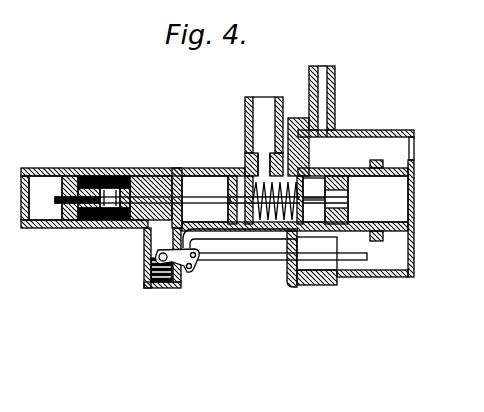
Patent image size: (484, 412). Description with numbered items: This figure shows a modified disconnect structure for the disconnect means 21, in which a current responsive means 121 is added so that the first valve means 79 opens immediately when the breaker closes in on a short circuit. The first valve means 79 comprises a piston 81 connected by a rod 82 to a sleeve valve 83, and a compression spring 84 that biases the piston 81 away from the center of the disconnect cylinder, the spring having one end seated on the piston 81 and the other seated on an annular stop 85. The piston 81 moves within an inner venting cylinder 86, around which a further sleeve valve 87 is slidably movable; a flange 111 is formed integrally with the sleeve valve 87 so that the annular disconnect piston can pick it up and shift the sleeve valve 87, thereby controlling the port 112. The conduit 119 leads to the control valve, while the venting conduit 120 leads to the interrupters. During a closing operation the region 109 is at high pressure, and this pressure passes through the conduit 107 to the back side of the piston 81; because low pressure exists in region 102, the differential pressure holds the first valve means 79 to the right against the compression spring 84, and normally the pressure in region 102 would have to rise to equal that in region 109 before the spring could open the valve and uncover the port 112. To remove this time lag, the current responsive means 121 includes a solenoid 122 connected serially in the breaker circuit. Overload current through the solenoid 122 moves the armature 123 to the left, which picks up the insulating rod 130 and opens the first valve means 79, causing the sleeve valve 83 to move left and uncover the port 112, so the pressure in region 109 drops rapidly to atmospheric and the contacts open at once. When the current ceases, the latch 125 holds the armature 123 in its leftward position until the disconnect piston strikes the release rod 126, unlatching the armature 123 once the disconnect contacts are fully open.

The venting conduit 120 is at (336, 82).
The conduit 119 is at (244, 116).
The current responsive means 121 is at (114, 164).
The armature 123 is at (158, 175).
The first valve means 79 is at (210, 175).
The piston 81 is at (234, 176).
The inner venting cylinder 86 is at (337, 175).
The flange 111 is at (379, 157).
The insulating rod 130 is at (231, 203).
The rod 82 is at (311, 200).
The annular stop 85 is at (314, 211).
The region 102 is at (400, 208).
The sleeve valve 83 is at (349, 216).
The port 112 is at (344, 232).
The region 109 is at (400, 267).
The solenoid 122 is at (106, 229).
The latch 125 is at (145, 255).
The conduit 107 is at (240, 244).
The compression spring 84 is at (276, 228).
The release rod 126 is at (347, 278).
The sleeve valve 87 is at (398, 272).
The disconnect means 21 is at (380, 311).